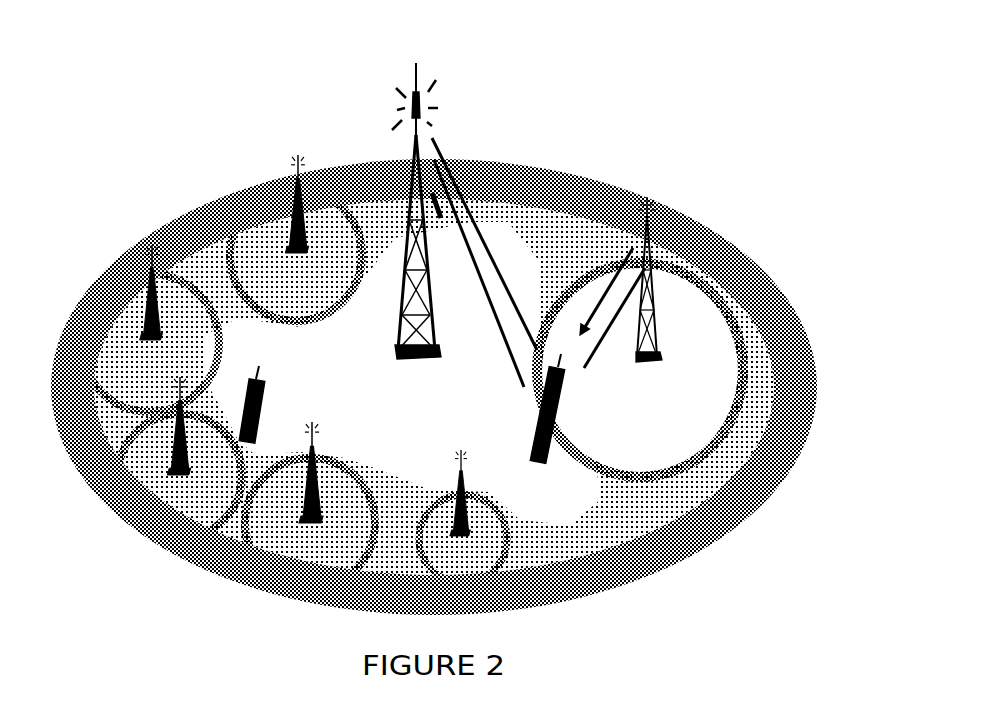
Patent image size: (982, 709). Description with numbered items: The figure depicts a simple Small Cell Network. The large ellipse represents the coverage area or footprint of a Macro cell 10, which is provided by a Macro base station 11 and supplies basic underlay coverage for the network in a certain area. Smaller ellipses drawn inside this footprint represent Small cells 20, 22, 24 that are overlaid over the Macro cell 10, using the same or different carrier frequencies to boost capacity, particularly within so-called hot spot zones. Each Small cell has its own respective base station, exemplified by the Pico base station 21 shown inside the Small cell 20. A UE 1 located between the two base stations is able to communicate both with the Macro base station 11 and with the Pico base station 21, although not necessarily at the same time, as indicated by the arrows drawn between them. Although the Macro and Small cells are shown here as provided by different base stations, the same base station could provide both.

The Macro cell 10 is at (434, 387).
The Macro base station 11 is at (462, 250).
The UE 1 is at (559, 443).
The Small cell 20 is at (671, 370).
The Pico base station 21 is at (652, 316).
The Small cell 22 is at (483, 519).
The Small cell 24 is at (331, 505).